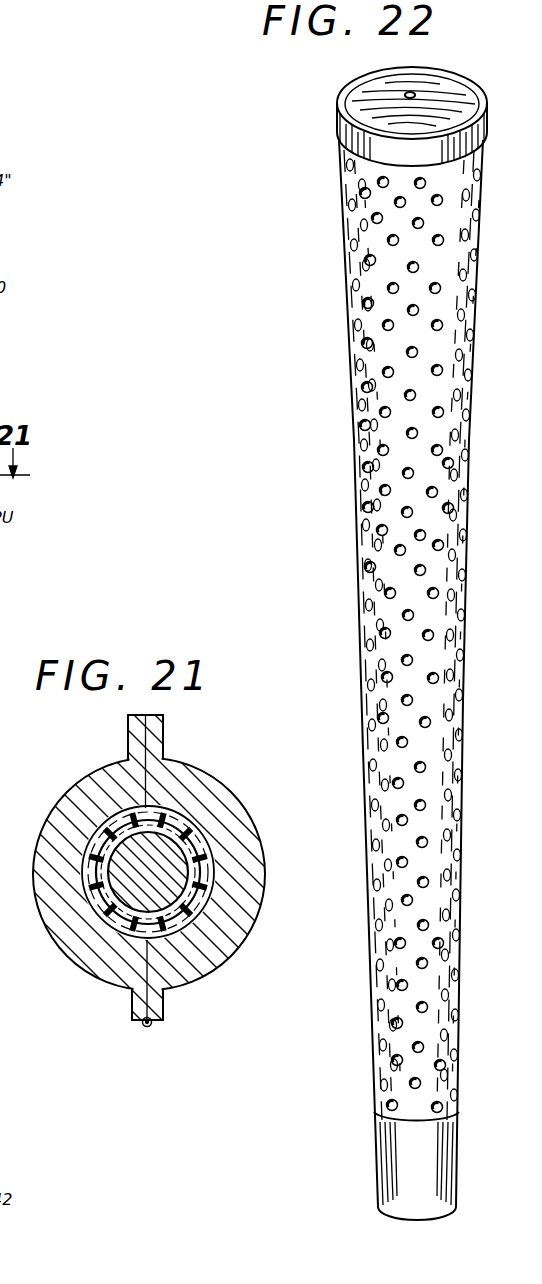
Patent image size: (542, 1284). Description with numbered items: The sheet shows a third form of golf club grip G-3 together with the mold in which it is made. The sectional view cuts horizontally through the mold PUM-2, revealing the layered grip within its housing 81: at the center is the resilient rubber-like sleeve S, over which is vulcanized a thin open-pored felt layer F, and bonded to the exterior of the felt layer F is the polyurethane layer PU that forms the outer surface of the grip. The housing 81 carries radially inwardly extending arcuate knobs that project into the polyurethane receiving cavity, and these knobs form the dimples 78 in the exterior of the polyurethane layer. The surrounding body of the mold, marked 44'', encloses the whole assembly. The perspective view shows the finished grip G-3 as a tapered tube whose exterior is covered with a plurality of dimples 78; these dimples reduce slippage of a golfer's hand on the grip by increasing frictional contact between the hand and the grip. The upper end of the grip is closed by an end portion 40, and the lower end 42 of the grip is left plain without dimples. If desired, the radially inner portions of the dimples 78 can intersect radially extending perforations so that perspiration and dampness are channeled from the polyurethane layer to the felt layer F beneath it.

In FIG. 22, the end cap 40 is at (351, 103).
In FIG. 22, the golf club grip G-3 is at (351, 258).
In FIG. 22, the dimples 78 is at (382, 326).
In FIG. 22, the lower end portion of tube 42 is at (385, 1160).
In FIG. 21, the housing body 44'' is at (271, 865).
In FIG. 21, the mold PUM-2 is at (88, 960).
In FIG. 21, the housing 81 is at (190, 968).
In FIG. 21, the polyurethane layer PU is at (194, 832).
In FIG. 21, the felt layer F is at (200, 884).
In FIG. 21, the sleeve S is at (115, 824).